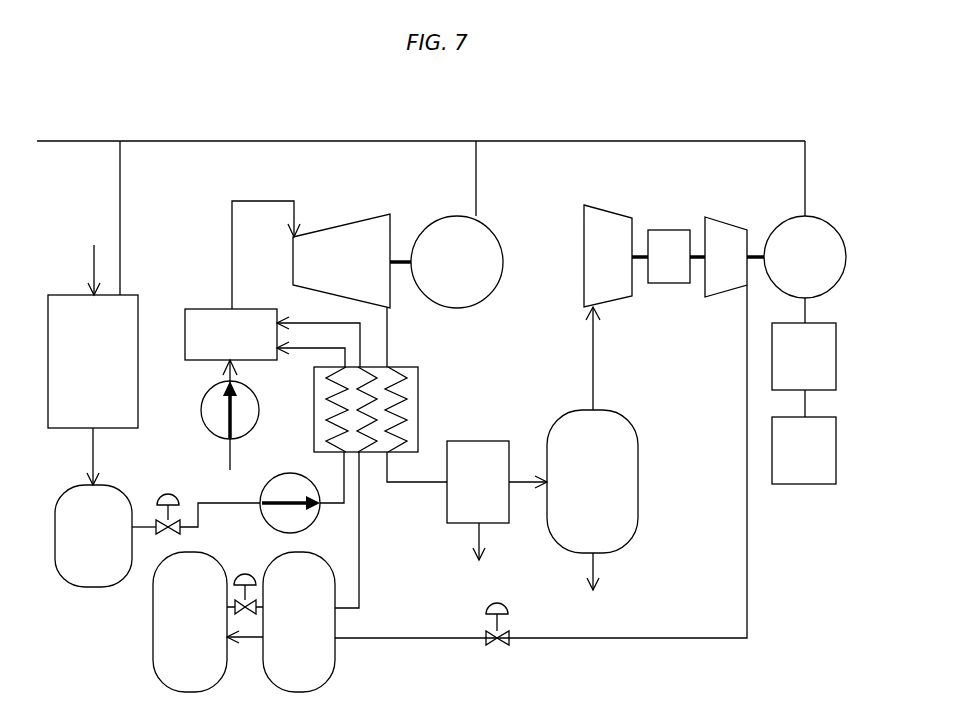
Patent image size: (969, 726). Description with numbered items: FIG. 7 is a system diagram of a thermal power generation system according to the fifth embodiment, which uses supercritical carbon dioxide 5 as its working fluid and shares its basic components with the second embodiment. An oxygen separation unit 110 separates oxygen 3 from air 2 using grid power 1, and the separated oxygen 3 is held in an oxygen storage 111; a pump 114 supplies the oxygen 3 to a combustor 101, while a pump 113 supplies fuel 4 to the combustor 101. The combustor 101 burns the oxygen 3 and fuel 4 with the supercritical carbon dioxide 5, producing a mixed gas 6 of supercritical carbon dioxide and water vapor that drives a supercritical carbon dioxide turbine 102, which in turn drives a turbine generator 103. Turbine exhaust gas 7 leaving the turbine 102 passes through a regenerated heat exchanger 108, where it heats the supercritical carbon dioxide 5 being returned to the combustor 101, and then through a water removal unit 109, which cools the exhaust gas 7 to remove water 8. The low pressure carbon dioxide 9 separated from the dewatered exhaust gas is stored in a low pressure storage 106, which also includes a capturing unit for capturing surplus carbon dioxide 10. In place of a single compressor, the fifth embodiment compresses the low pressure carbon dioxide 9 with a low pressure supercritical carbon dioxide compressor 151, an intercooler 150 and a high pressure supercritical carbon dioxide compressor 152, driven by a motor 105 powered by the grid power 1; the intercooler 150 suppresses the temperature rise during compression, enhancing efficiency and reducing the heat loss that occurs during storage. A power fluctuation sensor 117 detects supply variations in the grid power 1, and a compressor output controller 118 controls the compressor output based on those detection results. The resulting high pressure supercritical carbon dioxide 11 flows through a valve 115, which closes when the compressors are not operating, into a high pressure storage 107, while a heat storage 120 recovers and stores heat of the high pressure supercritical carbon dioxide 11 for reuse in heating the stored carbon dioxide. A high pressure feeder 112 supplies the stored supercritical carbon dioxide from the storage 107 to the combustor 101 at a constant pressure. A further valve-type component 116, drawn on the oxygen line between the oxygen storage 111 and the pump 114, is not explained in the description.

The grid power 1 is at (200, 141).
The air 2 is at (92, 264).
The oxygen 3 is at (93, 456).
The fuel 4 is at (230, 456).
The supercritical carbon dioxide 5 is at (300, 322).
The mixed gas 6 is at (240, 201).
The turbine exhaust gas 7 is at (387, 345).
The water 8 is at (478, 541).
The low pressure carbon dioxide 9 is at (592, 362).
The surplus carbon dioxide 10 is at (590, 582).
The high pressure supercritical carbon dioxide 11 is at (748, 591).
The combustor 101 is at (206, 309).
The supercritical CO2 turbine 102 is at (345, 221).
The supercritical CO2 turbine generator 103 is at (452, 216).
The motor 105 is at (821, 218).
The low pressure CO2 storage 106 is at (606, 410).
The high pressure supercritical CO2 storage 107 is at (153, 661).
The regenerated heat exchanger 108 is at (418, 387).
The water removal unit 109 is at (478, 441).
The oxygen separation unit 110 is at (135, 295).
The oxygen storage 111 is at (90, 589).
The high pressure supercritical CO2 feeder 112 is at (245, 575).
The pump 113 is at (203, 402).
The pump 114 is at (290, 473).
The valve 115 is at (504, 646).
The control valve 116 is at (164, 495).
The power fluctuation sensor 117 is at (836, 451).
The supercritical CO2 compressor output controller 118 is at (836, 356).
The heat storage 120 is at (338, 664).
The intercooler 150 is at (668, 230).
The low pressure supercritical CO2 compressor 151 is at (610, 205).
The high pressure supercritical CO2 compressor 152 is at (726, 218).